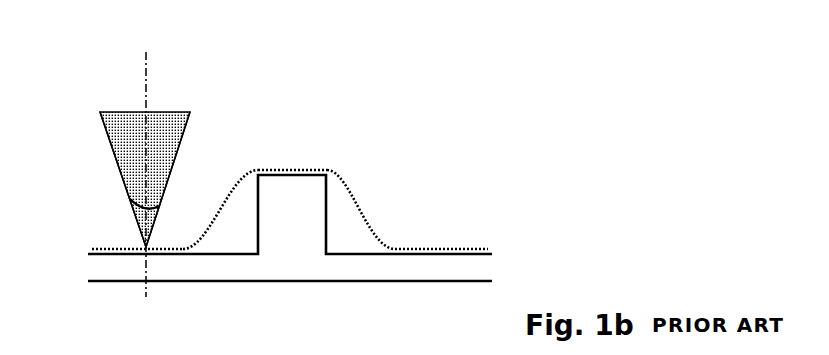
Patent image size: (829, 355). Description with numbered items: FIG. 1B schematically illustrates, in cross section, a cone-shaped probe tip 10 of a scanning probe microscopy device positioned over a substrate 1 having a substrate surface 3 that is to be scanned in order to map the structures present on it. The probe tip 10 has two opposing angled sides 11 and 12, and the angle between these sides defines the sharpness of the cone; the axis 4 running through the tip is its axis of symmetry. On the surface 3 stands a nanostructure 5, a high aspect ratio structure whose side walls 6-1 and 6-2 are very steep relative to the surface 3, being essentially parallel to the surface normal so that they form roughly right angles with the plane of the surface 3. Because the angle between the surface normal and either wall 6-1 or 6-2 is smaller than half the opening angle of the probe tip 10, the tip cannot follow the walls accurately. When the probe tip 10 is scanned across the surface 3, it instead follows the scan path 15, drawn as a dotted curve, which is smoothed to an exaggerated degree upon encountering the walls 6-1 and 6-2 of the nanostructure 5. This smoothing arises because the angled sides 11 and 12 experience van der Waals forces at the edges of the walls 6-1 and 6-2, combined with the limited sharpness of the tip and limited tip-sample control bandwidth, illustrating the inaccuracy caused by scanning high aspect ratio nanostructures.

The substrate 1 is at (193, 268).
The substrate surface 3 is at (375, 253).
The axis 4 is at (142, 91).
The nanostructure 5 is at (298, 190).
The side wall 6-1 is at (256, 198).
The side wall 6-2 is at (328, 223).
The probe tip 10 is at (163, 122).
The side of the probe tip 11 is at (120, 182).
The side of the probe tip 12 is at (185, 133).
The scan path 15 is at (347, 180).